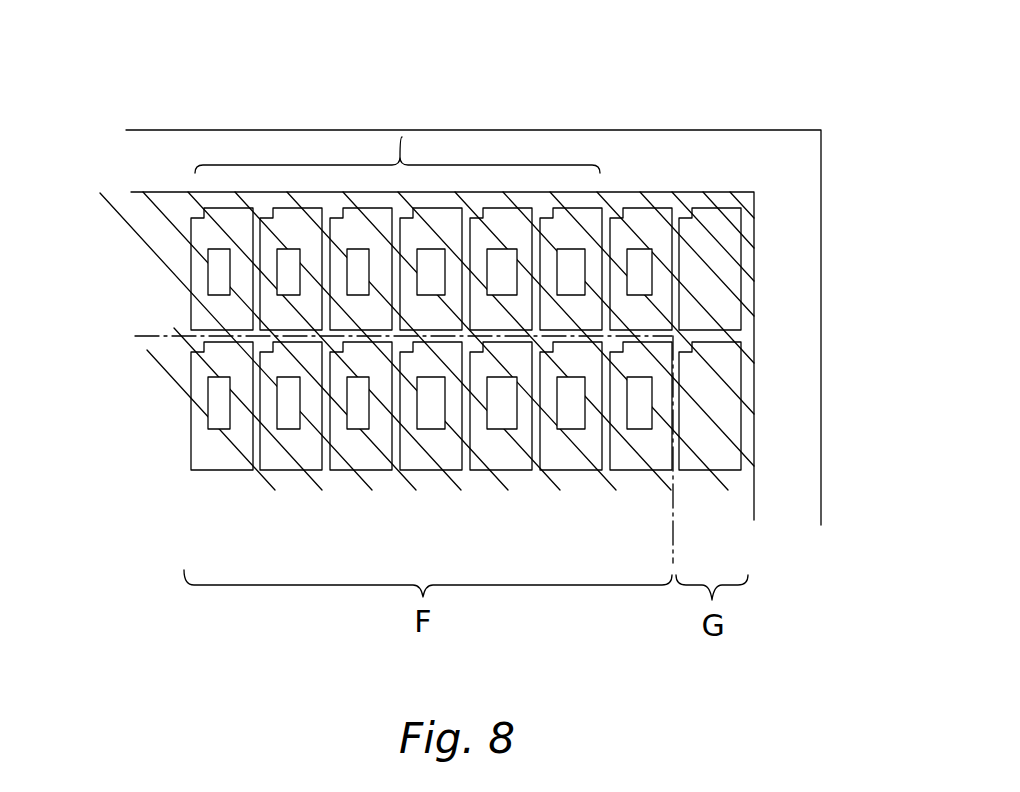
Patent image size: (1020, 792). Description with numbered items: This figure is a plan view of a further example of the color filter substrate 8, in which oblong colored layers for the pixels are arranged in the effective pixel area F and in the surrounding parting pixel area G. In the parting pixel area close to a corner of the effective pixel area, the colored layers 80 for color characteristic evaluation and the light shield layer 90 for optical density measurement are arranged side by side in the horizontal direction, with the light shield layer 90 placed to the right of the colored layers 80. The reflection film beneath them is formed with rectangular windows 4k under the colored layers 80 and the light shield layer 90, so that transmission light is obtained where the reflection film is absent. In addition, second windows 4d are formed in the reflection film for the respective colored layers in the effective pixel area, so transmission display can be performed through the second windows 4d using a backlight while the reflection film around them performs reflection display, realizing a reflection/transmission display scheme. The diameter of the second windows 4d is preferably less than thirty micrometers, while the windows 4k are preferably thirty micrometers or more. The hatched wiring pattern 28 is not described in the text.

The color filter substrate 8 is at (835, 273).
The colored layers for color characteristic evaluation 80 is at (401, 137).
The light shield layer for optical density measurement 90 is at (638, 195).
The wiring pattern 28 is at (397, 496).
The windows 4k is at (219, 268).
The second windows 4d is at (221, 413).